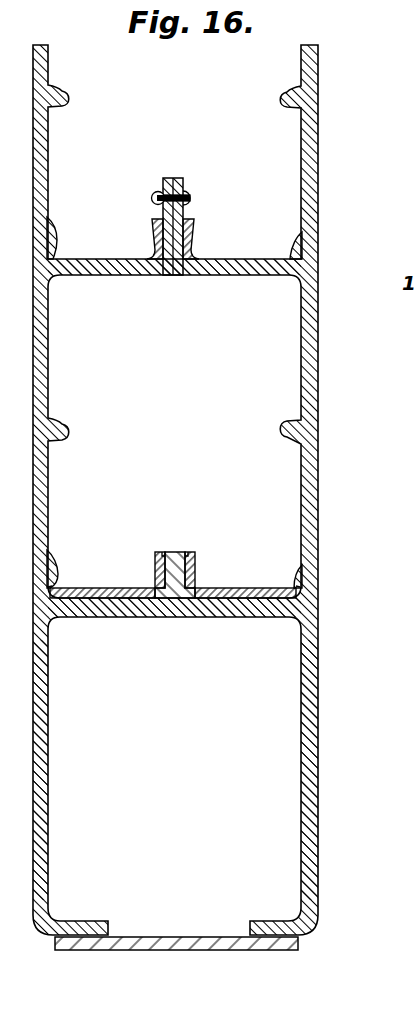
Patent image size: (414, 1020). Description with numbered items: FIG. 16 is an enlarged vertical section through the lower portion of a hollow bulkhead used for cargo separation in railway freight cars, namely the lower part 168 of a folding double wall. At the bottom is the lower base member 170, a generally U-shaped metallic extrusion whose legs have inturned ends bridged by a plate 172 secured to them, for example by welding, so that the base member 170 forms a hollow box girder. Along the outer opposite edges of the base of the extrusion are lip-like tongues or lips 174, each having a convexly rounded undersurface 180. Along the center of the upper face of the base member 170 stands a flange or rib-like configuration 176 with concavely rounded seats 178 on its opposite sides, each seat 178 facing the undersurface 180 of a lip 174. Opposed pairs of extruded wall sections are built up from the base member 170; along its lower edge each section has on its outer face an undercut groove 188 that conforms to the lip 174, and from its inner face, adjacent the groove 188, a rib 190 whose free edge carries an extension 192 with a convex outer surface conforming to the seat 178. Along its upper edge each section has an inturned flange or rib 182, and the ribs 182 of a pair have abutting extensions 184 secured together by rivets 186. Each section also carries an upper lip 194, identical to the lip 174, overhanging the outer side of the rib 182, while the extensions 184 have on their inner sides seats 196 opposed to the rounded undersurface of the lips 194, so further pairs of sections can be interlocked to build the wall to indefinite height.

The lower part 168 is at (325, 521).
The lower base member 170 is at (322, 803).
The plate 172 is at (176, 950).
The lip 174 is at (46, 584).
The flange or rib-like configuration 176 is at (176, 551).
The seat 178 is at (157, 566).
The convexly rounded undersurface 180 is at (50, 586).
The inturned flange or rib 182 is at (133, 276).
The extension 184 is at (163, 183).
The rivet 186 is at (193, 198).
The undercut groove 188 is at (48, 553).
The rib 190 is at (134, 590).
The extension 192 is at (160, 552).
The lip 194 is at (55, 238).
The seat 196 is at (157, 236).